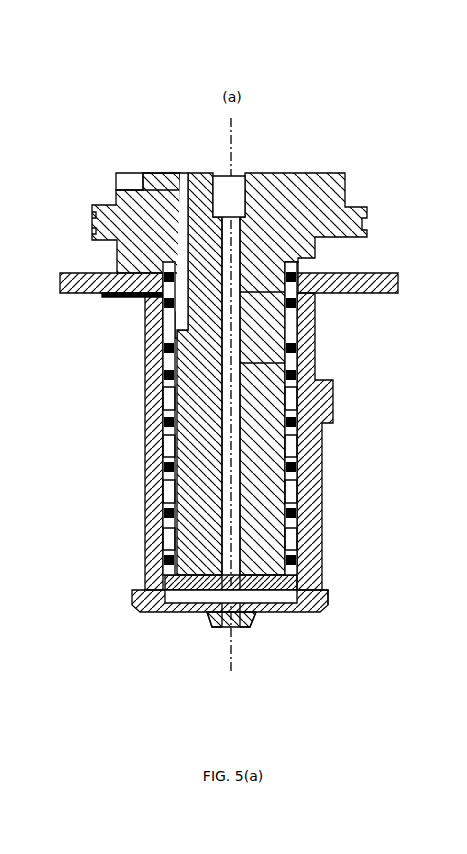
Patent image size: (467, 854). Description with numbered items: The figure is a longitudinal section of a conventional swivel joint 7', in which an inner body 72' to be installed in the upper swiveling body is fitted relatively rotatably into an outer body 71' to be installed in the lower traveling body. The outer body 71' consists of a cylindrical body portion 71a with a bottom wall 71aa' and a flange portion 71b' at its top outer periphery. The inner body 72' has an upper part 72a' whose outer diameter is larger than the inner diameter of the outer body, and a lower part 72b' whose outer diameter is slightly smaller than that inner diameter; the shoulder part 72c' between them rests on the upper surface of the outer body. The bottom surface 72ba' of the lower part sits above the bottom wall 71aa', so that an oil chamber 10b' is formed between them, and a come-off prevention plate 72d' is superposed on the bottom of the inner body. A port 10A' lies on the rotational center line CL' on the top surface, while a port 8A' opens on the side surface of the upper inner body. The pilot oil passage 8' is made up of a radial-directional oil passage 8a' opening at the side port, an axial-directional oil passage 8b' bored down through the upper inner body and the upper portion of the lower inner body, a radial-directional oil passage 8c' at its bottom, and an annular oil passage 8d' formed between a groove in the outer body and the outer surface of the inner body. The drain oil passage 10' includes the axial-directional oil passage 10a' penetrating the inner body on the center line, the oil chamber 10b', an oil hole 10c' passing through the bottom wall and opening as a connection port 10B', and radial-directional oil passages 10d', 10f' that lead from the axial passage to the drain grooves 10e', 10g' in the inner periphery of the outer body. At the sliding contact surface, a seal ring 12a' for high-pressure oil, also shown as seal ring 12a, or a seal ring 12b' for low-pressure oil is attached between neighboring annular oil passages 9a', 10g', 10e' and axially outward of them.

The swivel joint 7' is at (242, 379).
The rotational center line CL' is at (257, 388).
The inner body 72' is at (227, 343).
The upper part 72a' is at (108, 223).
The lower part 72b' is at (130, 441).
The shoulder part 72c' is at (329, 260).
The come-off prevention plate 72d' is at (196, 580).
The bottom surface 72ba' is at (357, 592).
The pilot oil passage 8' is at (147, 356).
The port 8A' is at (107, 174).
The radial-directional oil passage 8a' is at (161, 163).
The axial-directional oil passage 8b' is at (192, 237).
The radial-directional oil passage 8c' is at (139, 349).
The annular oil passage 8d' is at (144, 325).
The drain oil passage 10' is at (302, 394).
The connection port 10A' is at (244, 172).
The connection port 10B' is at (240, 639).
The axial-directional oil passage 10a' is at (328, 374).
The oil chamber 10b' is at (271, 628).
The oil hole 10c' is at (206, 639).
The radial-directional oil passage 10d' is at (333, 312).
The drain groove 10e' is at (385, 300).
The radial-directional oil passage 10f' is at (336, 338).
The drain groove 10g' is at (337, 361).
The outer body 71' is at (253, 450).
The body portion 71a is at (335, 425).
The bottom wall 71aa' is at (219, 618).
The flange portion 71b' is at (253, 274).
The annular oil passage 9a' is at (266, 462).
The seal ring 12a' is at (237, 420).
The seal ring 12a is at (326, 513).
The seal ring 12b' is at (112, 301).